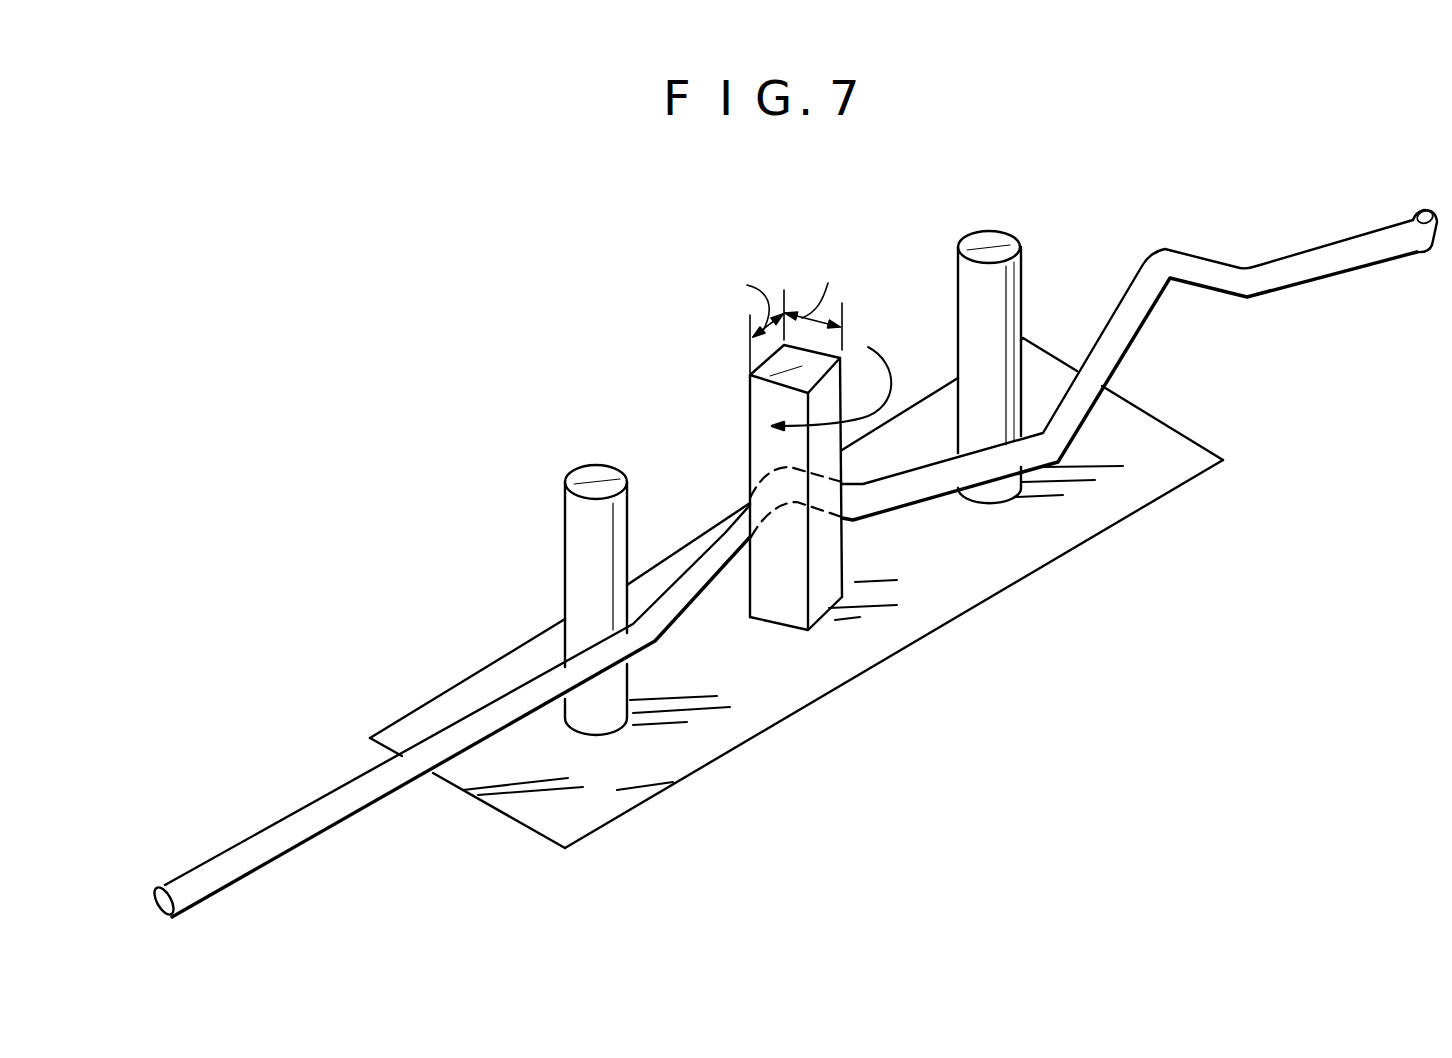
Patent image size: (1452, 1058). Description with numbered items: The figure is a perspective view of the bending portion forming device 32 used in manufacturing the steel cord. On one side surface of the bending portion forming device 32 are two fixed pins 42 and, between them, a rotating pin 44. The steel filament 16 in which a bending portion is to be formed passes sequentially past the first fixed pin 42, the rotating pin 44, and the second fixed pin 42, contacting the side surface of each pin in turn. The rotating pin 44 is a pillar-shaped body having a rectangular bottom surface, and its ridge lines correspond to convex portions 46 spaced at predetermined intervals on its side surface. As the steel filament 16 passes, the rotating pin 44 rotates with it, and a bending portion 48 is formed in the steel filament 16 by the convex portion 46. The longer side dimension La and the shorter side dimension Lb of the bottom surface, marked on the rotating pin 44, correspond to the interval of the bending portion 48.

The bending portion forming device 32 is at (483, 220).
The fixed pin 42 is at (597, 478).
The rotating pin 44 is at (810, 365).
The convex portion 46 is at (750, 383).
The steel filament 16 is at (474, 723).
The bending portion 48 is at (1157, 260).